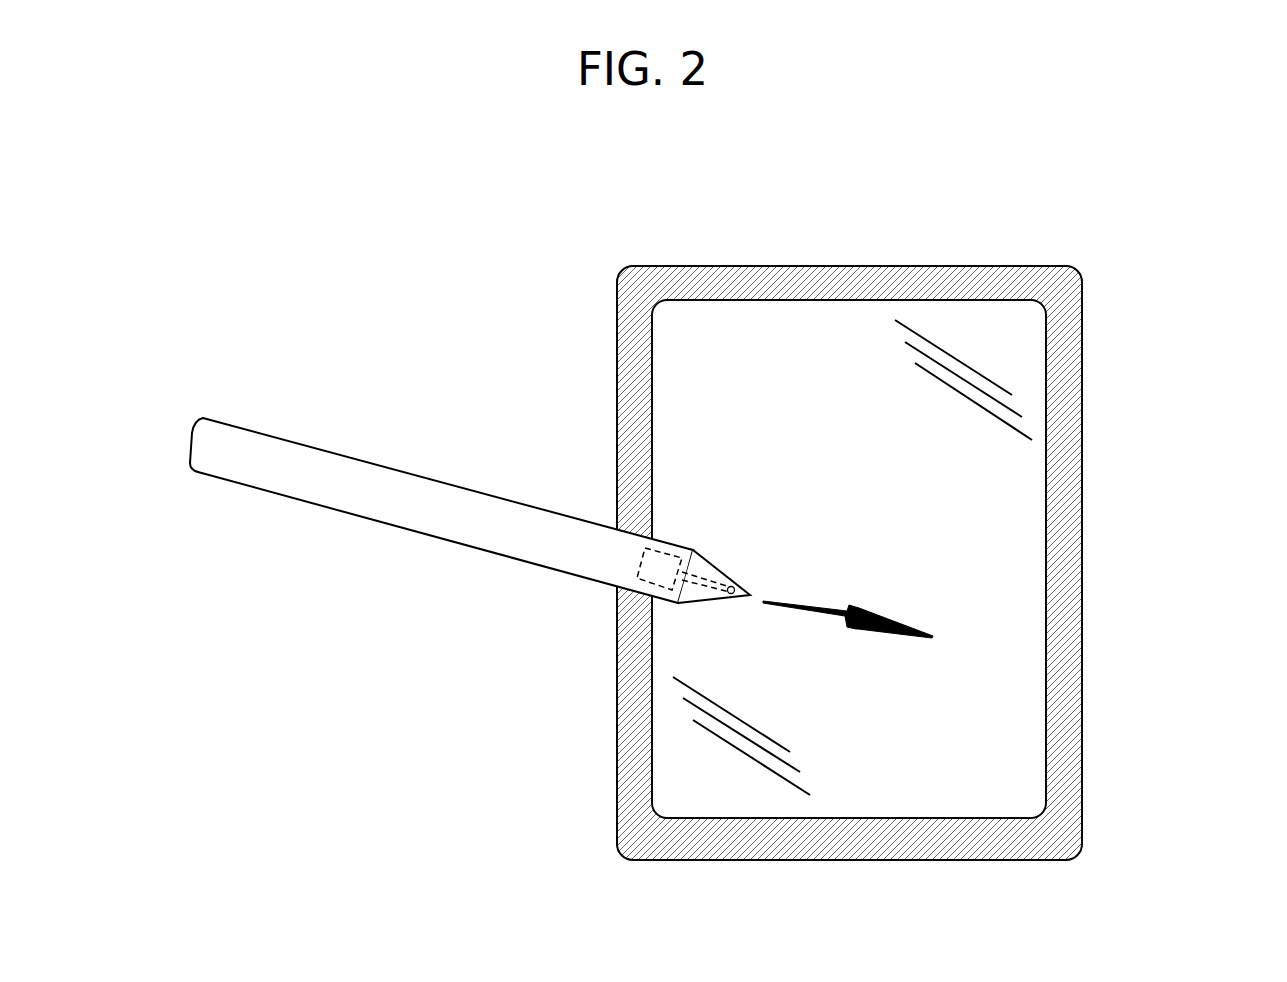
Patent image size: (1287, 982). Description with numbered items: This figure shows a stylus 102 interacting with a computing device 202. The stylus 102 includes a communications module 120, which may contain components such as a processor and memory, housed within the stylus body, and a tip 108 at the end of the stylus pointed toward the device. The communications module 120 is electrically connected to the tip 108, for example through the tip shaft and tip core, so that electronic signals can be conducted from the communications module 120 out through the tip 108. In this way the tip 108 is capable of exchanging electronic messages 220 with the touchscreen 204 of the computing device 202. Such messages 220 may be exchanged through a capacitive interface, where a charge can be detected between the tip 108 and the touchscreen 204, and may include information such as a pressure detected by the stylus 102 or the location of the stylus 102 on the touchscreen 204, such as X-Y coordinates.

The stylus 102 is at (199, 421).
The communications module 120 is at (657, 548).
The tip 108 is at (738, 582).
The electronic messages 220 is at (857, 612).
The computing device 202 is at (1080, 402).
The touchscreen 204 is at (1030, 577).